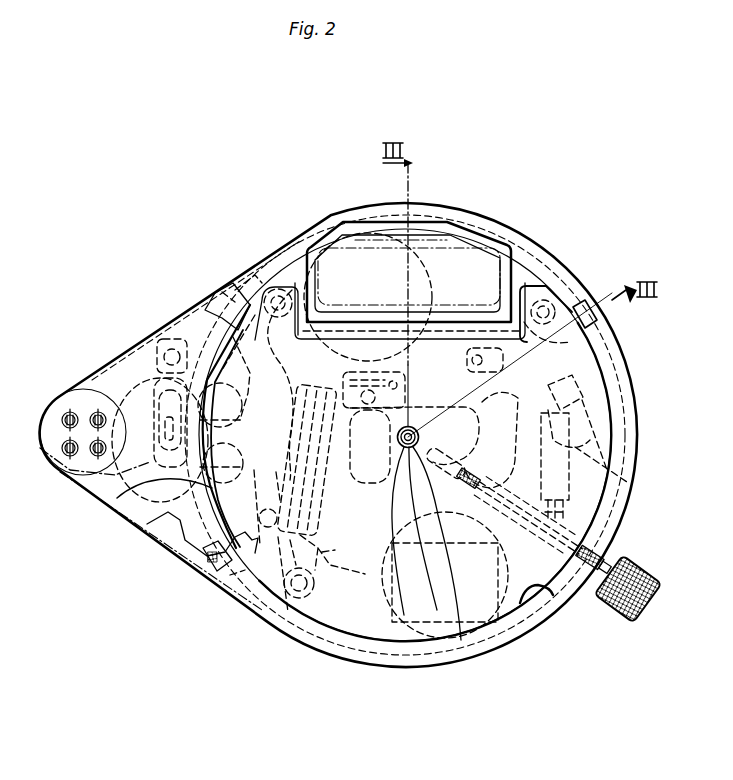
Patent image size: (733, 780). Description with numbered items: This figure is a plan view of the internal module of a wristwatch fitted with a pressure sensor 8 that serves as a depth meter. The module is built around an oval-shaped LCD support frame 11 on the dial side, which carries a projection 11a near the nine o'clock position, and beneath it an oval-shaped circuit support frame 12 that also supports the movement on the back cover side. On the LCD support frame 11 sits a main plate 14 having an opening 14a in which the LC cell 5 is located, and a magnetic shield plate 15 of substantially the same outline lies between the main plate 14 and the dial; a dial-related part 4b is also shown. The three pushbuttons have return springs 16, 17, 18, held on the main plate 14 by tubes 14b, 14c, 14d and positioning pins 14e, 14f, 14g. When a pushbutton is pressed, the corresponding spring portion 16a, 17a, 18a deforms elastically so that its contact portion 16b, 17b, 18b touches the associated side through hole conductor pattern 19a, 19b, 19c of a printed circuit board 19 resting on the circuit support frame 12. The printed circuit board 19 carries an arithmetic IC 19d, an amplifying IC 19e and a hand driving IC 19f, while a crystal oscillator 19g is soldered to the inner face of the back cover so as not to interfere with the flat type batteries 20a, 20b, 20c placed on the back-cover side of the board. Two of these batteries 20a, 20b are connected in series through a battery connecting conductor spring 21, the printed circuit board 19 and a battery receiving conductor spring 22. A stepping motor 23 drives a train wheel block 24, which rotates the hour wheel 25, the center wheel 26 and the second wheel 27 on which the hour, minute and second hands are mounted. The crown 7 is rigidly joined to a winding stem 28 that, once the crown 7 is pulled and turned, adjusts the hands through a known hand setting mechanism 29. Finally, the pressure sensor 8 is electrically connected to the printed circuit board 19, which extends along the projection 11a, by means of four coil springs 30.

The cover 4b is at (420, 237).
The LC cell 5 is at (323, 233).
The crown 7 is at (640, 625).
The pressure sensor 8 is at (47, 400).
The LCD support frame 11 is at (262, 280).
The projection 11a is at (88, 485).
The circuit support frame 12 is at (168, 552).
The main plate 14 is at (338, 630).
The opening 14a is at (453, 415).
The tube 14b is at (310, 258).
The tube 14c is at (262, 672).
The tube 14d is at (543, 300).
The positioning pin 14e is at (292, 290).
The positioning pin 14f is at (232, 625).
The positioning pin 14g is at (487, 318).
The magnetic shield plate 15 is at (284, 665).
The return spring 16 is at (252, 278).
The spring portion 16a is at (200, 367).
The contact portion 16b is at (213, 300).
The return spring 17 is at (248, 650).
The spring portion 17a is at (120, 512).
The contact portion 17b is at (210, 577).
The return spring 18 is at (558, 287).
The spring portion 18a is at (627, 403).
The contact portion 18b is at (605, 314).
The printed circuit board 19 is at (150, 537).
The side through hole conductor pattern 19a is at (226, 290).
The side through hole conductor pattern 19b is at (218, 603).
The side through hole conductor pattern 19c is at (590, 288).
The arithmetic IC 19d is at (493, 640).
The amplifying IC 19e is at (158, 338).
The hand driving IC 19f is at (628, 493).
The crystal oscillator 19g is at (552, 585).
The flat type battery 20a is at (436, 275).
The flat type battery 20b is at (100, 372).
The flat type battery 20c is at (385, 480).
The battery connecting conductor spring 21 is at (332, 238).
The battery receiving conductor spring 22 is at (135, 370).
The stepping motor 23 is at (312, 600).
The train wheel block 24 is at (372, 482).
The hour wheel 25 is at (461, 640).
The center wheel 26 is at (437, 610).
The second wheel 27 is at (404, 615).
The winding stem 28 is at (594, 578).
The hand setting mechanism 29 is at (520, 640).
The coil spring 30 is at (45, 452).